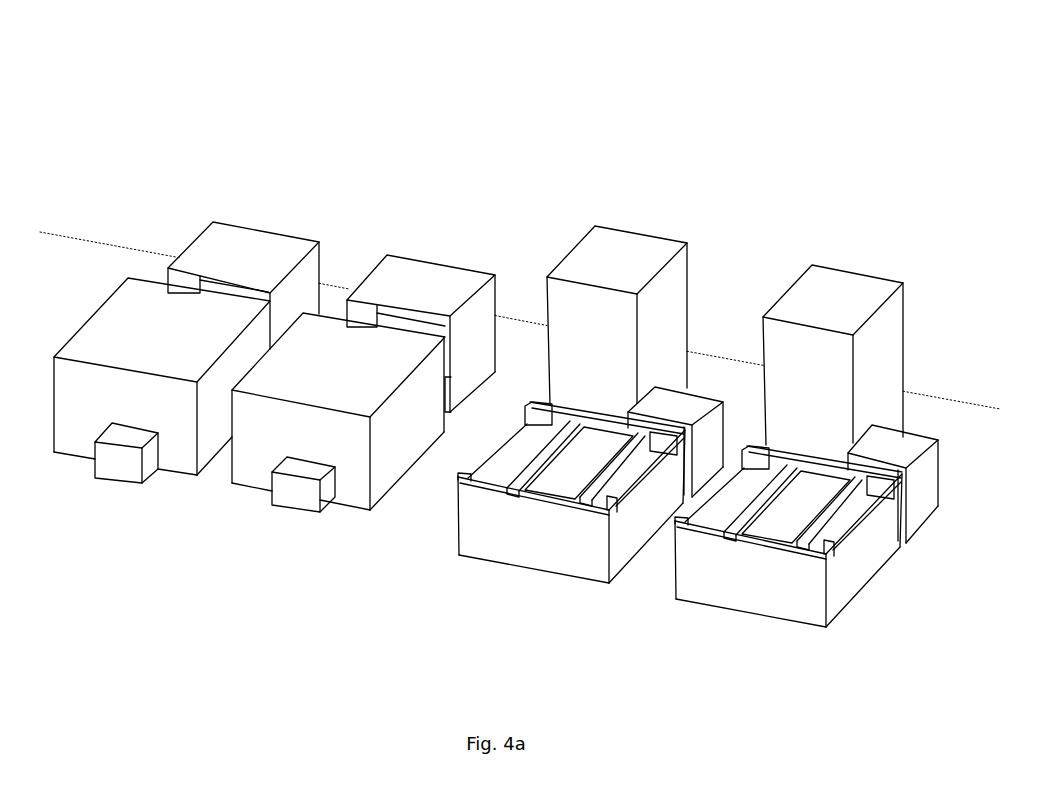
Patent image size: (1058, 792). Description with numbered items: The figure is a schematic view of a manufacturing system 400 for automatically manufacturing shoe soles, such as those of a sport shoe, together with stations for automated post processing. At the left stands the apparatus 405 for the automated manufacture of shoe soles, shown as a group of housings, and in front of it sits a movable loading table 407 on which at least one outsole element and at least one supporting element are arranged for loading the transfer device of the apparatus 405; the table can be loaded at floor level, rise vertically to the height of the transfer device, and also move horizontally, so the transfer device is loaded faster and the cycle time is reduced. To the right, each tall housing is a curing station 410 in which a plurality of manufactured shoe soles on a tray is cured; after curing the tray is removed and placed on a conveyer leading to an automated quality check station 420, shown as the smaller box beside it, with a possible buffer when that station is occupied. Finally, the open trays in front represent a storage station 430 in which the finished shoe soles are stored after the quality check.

The manufacturing system 400 is at (552, 90).
The apparatus 405 is at (362, 228).
The movable loading table 407 is at (298, 492).
The curing station 410 is at (637, 242).
The automated quality check station 420 is at (678, 402).
The storage station 430 is at (507, 538).